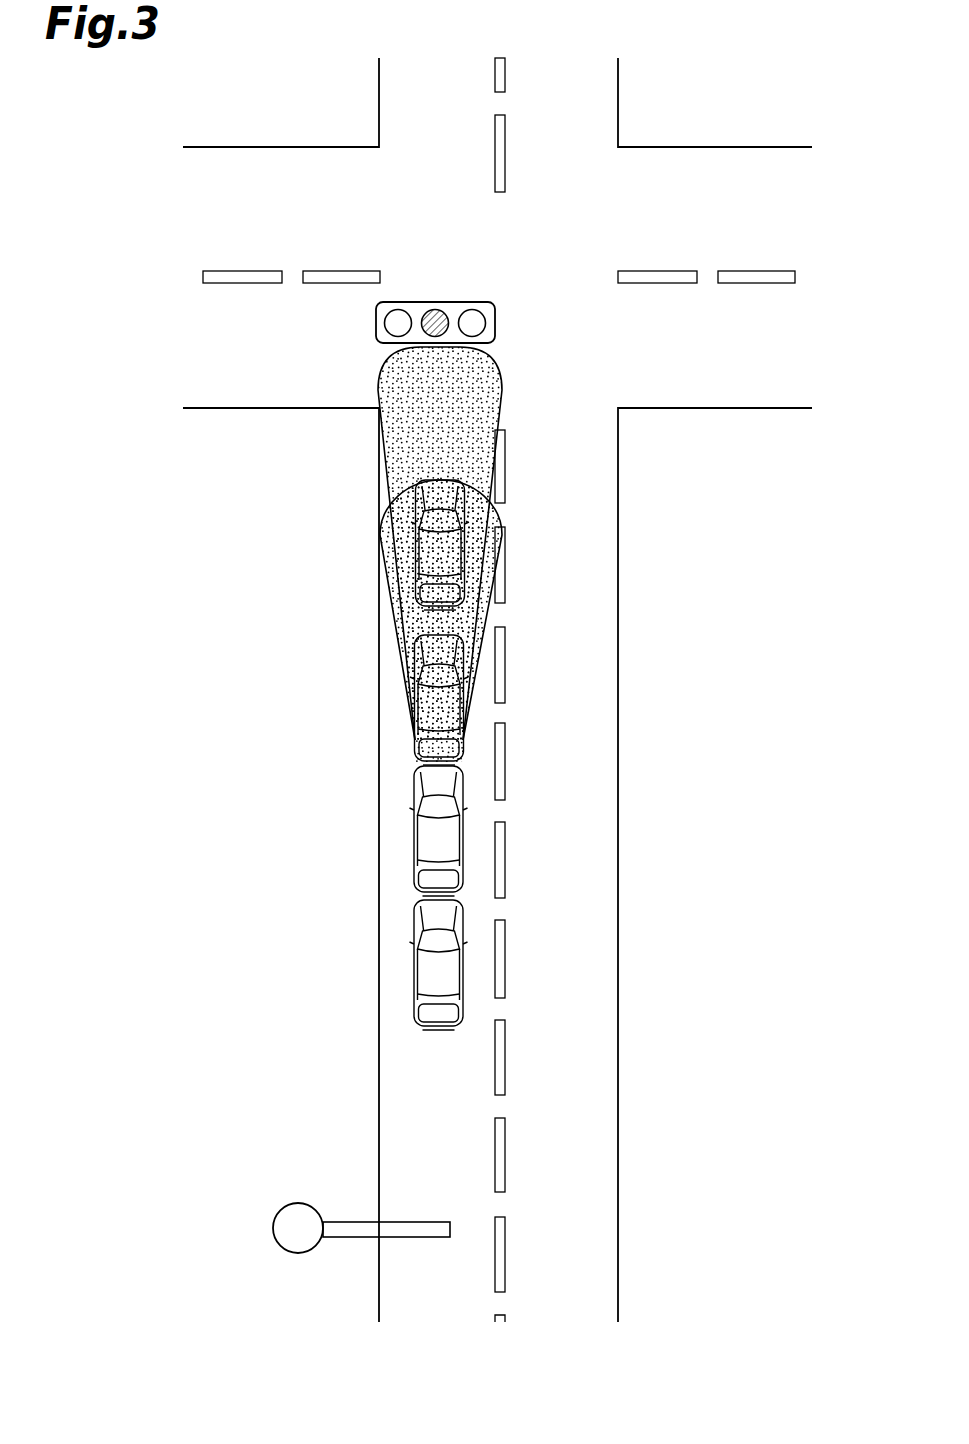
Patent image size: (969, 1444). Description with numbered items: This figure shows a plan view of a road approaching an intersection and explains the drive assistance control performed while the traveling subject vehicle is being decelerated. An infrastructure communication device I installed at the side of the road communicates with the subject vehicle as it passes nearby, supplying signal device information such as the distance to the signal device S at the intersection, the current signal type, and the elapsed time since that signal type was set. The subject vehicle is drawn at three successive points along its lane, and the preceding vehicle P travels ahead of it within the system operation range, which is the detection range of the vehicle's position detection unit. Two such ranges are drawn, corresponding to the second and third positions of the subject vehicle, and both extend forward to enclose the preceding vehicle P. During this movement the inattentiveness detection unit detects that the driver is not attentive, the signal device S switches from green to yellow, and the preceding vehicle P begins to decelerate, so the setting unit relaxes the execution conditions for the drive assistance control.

The signal device S is at (376, 316).
The preceding vehicle P is at (423, 613).
The infrastructure communication device I is at (300, 1203).